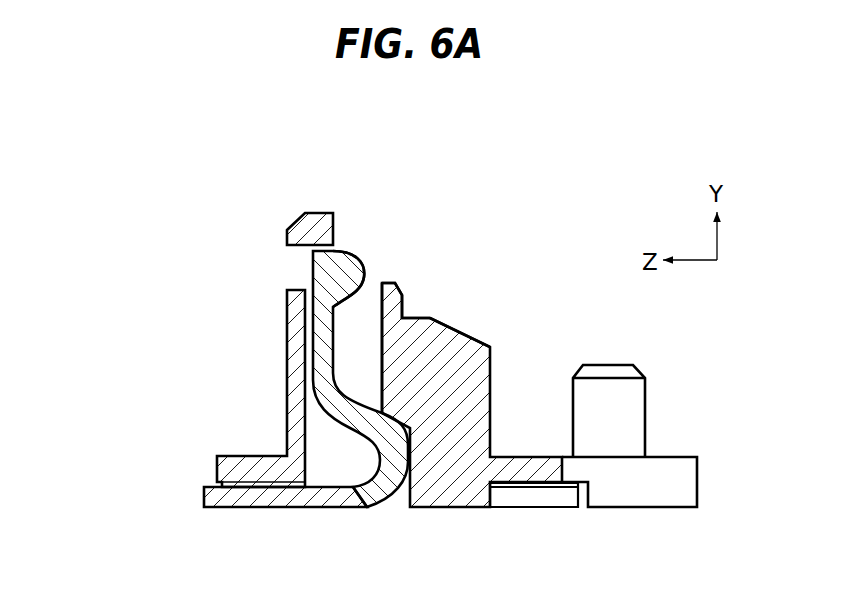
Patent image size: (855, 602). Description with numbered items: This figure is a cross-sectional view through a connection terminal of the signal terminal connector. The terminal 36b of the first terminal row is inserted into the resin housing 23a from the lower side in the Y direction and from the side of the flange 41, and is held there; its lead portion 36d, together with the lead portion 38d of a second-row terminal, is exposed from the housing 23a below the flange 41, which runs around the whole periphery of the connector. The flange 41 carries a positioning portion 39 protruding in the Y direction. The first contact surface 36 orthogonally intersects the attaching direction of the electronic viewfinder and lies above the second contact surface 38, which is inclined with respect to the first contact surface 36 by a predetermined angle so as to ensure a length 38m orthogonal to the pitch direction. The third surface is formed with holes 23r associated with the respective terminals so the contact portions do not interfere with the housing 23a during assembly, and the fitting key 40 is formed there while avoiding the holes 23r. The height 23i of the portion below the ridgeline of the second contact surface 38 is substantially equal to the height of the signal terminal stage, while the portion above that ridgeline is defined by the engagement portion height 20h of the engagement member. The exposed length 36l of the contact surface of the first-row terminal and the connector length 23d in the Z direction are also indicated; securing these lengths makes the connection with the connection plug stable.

The first contact surface 36 is at (318, 222).
The terminal 36b is at (352, 260).
The holes 23r is at (362, 317).
The fitting key 40 is at (395, 287).
The second contact surface 38 is at (452, 325).
The length orthogonal to the pitch direction of the second contact surface 38m is at (430, 318).
The positioning portions 39 is at (630, 412).
The flange 41 is at (683, 477).
The lead portion 36d is at (232, 500).
The housing 23a is at (448, 500).
The lead portion 38d is at (535, 500).
The length of the signal terminal connector in the Z direction 23d is at (490, 347).
The engagement portion height 20h is at (490, 349).
The exposed length of the contact surface 36l is at (333, 307).
The height of the portion lower than the ridgeline 23i is at (195, 508).